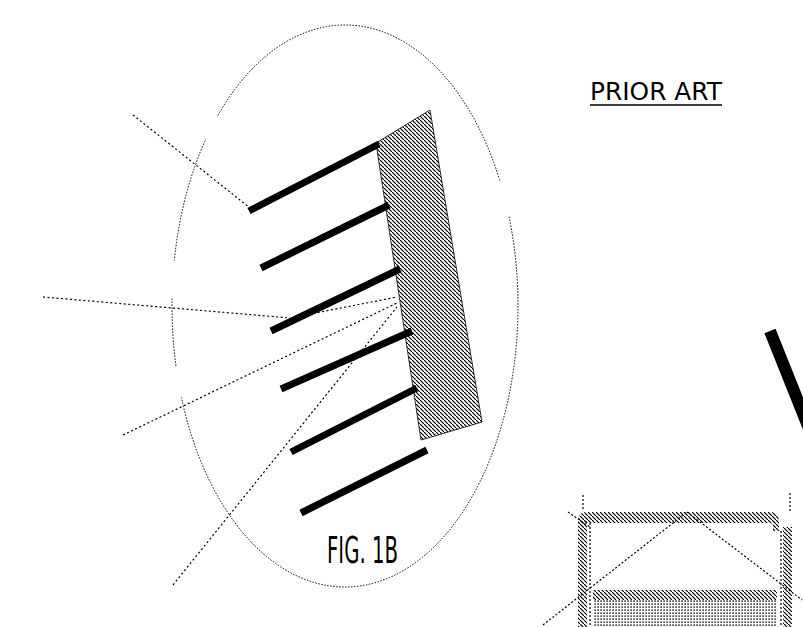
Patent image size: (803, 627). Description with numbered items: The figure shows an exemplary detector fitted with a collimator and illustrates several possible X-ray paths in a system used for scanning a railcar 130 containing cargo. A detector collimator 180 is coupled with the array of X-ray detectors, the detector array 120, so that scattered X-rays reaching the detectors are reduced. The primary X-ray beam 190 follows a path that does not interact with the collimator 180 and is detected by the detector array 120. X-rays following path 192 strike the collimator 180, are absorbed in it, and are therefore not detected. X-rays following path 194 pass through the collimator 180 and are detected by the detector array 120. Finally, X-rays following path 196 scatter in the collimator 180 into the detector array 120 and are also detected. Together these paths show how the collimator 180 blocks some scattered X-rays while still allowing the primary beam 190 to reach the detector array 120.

The X-ray path 192 is at (170, 116).
The X-ray path 196 is at (220, 262).
The primary X-ray beam 190 is at (228, 373).
The X-ray path 194 is at (230, 467).
The detector collimator 180 is at (355, 154).
The detector array 120 is at (455, 258).
The railcar 130 is at (672, 520).